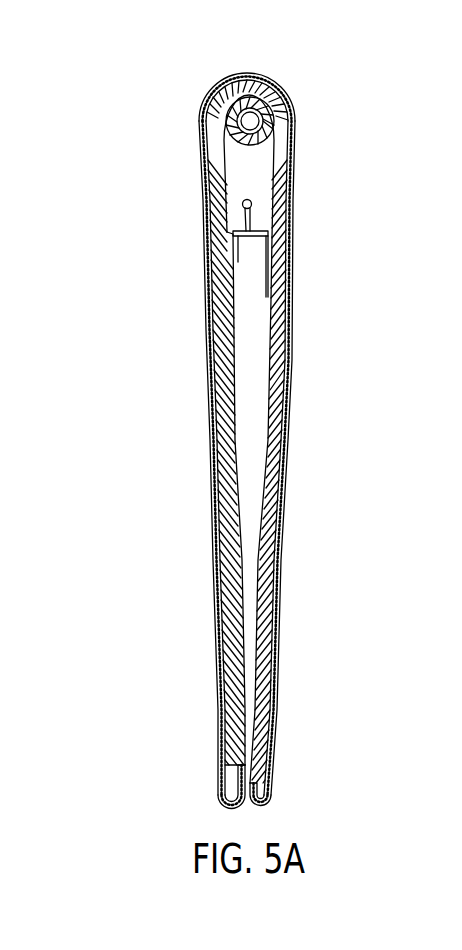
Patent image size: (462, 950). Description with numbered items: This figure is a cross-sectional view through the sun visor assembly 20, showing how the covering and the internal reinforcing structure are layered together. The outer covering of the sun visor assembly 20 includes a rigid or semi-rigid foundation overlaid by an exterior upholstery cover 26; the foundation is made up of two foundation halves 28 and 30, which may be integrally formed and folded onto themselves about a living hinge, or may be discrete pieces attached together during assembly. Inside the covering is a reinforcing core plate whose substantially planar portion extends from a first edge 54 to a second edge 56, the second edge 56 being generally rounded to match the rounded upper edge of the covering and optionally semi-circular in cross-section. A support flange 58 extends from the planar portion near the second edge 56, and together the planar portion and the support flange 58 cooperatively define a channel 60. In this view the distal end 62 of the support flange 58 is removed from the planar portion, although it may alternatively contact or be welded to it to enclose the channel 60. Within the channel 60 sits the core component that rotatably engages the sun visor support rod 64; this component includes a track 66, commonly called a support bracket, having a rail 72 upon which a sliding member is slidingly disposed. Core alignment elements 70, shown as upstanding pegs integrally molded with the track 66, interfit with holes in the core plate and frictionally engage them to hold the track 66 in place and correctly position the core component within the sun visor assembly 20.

The sun visor assembly 20 is at (128, 465).
The exterior upholstery cover 26 is at (215, 688).
The foundation half 28 is at (291, 134).
The foundation half 30 is at (204, 205).
The first edge 54 is at (243, 727).
The second edge 56 is at (243, 113).
The support flange 58 is at (275, 219).
The channel 60 is at (245, 178).
The distal end 62 is at (256, 243).
The sun visor support rod 64 is at (226, 109).
The track 66 is at (287, 268).
The core alignment elements 70 is at (224, 279).
The rail 72 is at (252, 205).